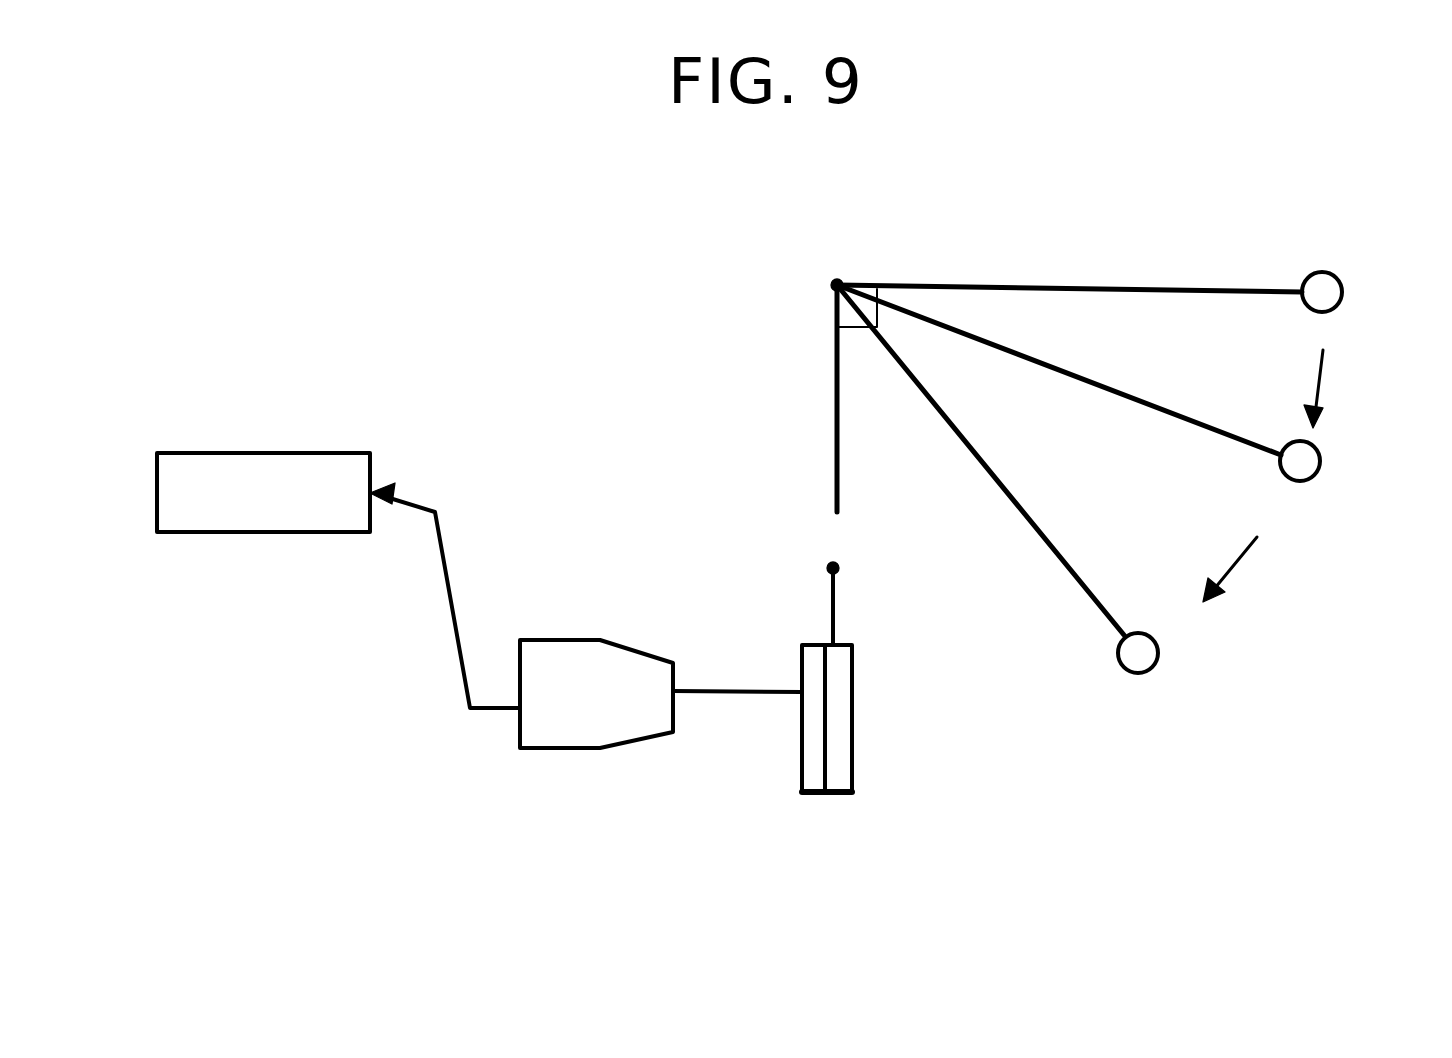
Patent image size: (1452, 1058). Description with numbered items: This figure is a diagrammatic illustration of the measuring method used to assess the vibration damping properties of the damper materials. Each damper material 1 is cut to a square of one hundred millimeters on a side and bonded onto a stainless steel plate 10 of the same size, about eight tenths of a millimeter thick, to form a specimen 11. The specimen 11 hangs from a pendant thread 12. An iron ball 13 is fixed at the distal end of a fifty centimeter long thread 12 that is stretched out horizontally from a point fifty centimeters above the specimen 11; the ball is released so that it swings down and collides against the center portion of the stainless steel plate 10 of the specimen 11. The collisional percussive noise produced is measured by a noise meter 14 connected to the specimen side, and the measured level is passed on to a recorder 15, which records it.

The piezoelectric element 1 is at (813, 752).
The stainless steel plate 10 is at (842, 748).
The specimen 11 is at (822, 810).
The thread 12 is at (1110, 287).
The iron ball 13 is at (1330, 297).
The noise meter 14 is at (575, 750).
The recorder 15 is at (285, 535).